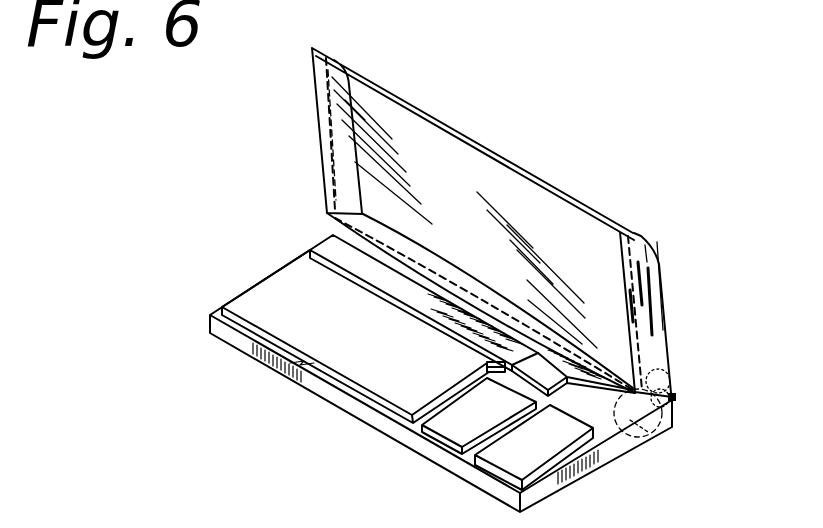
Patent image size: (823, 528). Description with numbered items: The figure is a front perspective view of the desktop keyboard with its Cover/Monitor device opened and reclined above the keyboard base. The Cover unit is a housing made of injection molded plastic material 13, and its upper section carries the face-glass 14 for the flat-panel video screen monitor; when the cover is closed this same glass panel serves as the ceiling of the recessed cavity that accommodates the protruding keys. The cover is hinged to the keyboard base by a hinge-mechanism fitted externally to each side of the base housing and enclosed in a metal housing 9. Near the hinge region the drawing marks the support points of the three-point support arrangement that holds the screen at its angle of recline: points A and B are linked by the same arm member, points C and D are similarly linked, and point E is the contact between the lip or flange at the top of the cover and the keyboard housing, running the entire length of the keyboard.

The metal housing 9 is at (332, 142).
The injection molded plastic material 13 is at (535, 175).
The face-glass 14 is at (442, 197).
The point A is at (673, 387).
The point B is at (673, 392).
The point C is at (674, 399).
The point D is at (640, 445).
The point E is at (676, 396).